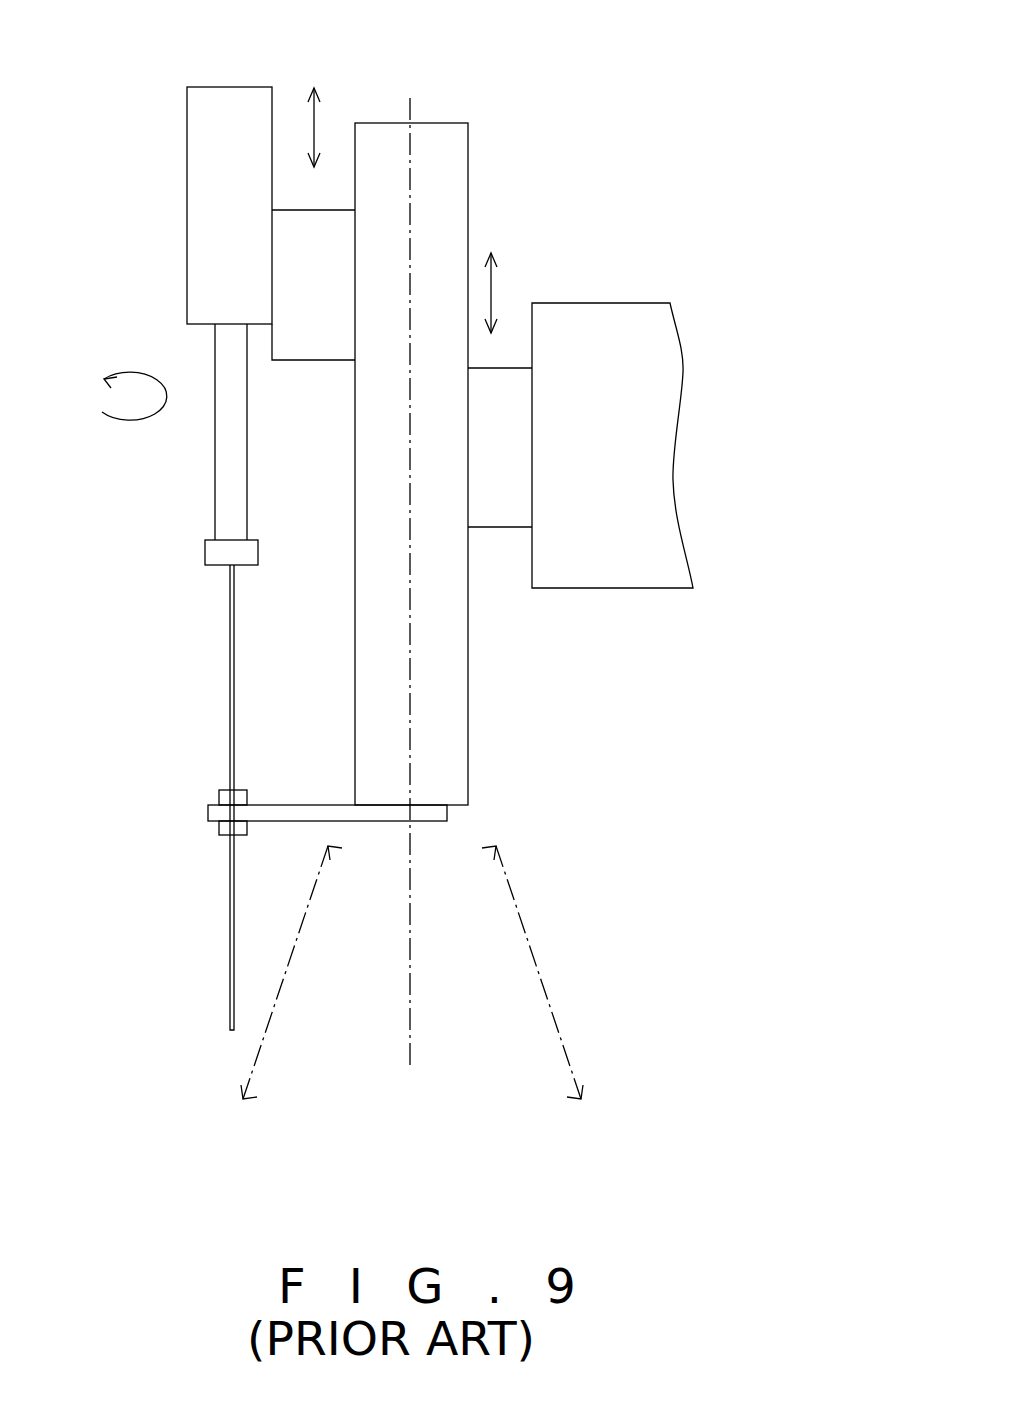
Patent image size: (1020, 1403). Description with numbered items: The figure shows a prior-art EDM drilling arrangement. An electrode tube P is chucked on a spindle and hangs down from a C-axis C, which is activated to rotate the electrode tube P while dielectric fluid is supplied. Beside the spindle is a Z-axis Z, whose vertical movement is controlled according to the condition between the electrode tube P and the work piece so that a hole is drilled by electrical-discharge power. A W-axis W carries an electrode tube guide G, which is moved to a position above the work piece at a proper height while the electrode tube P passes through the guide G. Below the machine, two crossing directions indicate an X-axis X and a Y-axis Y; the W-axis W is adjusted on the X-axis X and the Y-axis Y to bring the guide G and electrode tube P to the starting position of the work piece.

The C-axis C is at (212, 236).
The Z-axis Z is at (308, 242).
The W-axis W is at (433, 167).
The electrode tube P is at (230, 635).
The electrode tube guide G is at (225, 828).
The X-axis X is at (284, 990).
The Y-axis Y is at (545, 990).